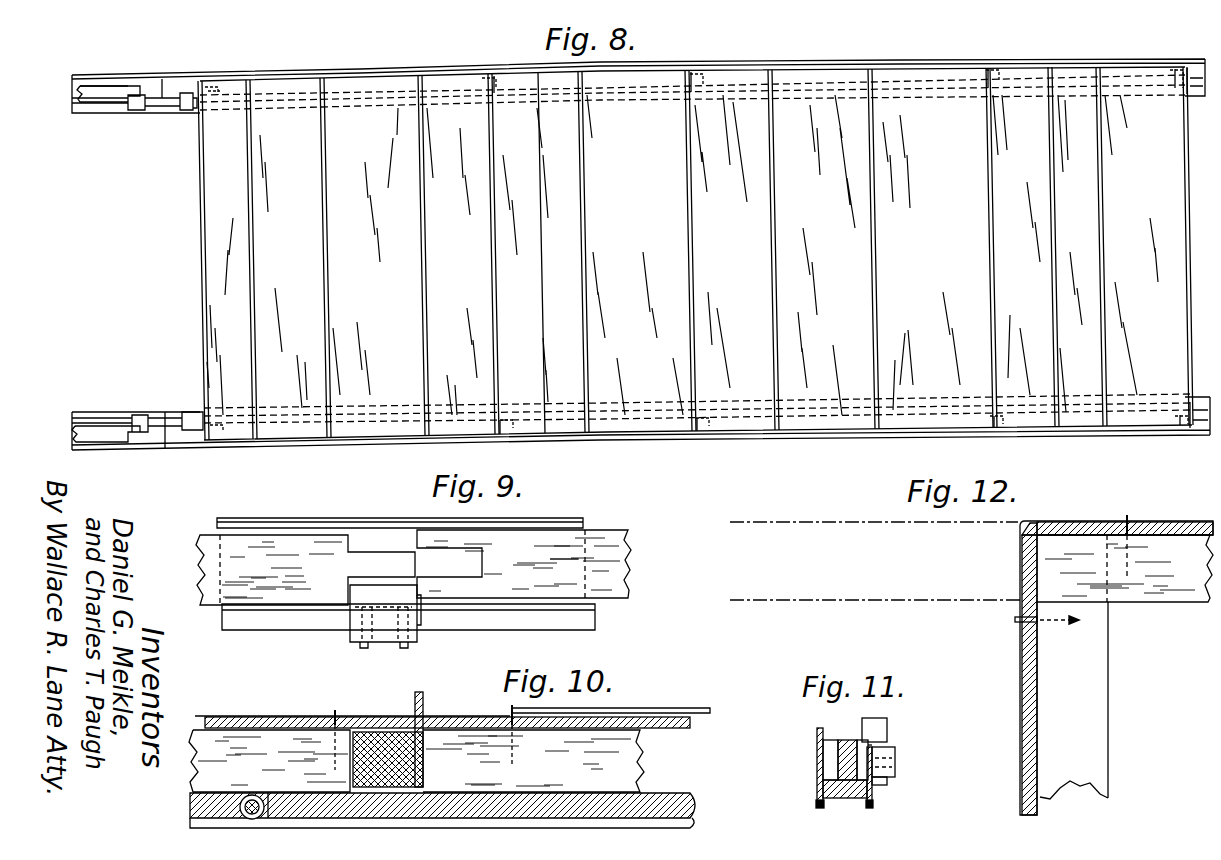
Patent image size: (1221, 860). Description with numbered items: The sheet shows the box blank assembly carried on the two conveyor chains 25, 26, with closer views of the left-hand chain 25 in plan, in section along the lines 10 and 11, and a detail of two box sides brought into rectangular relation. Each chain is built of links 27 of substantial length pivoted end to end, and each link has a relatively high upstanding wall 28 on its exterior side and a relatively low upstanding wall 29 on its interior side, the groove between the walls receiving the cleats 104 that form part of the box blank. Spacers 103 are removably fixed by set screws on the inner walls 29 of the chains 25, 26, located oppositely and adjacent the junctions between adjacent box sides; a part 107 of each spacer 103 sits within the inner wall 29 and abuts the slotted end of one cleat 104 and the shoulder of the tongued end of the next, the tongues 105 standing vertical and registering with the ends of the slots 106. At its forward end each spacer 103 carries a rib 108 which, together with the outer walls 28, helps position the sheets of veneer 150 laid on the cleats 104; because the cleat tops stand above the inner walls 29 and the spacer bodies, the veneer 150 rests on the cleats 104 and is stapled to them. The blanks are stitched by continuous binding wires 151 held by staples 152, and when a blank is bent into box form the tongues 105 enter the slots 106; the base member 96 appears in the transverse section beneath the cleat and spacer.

In FIG. 8, the conveyor chain 25 is at (176, 96).
In FIG. 9, the conveyor chain 25 is at (220, 527).
In FIG. 8, the conveyor chain 26 is at (113, 418).
In FIG. 11, the link 27 is at (860, 798).
In FIG. 11, the upstanding wall 28 is at (817, 742).
In FIG. 11, the upstanding wall 29 is at (895, 770).
In FIG. 11, the base member 96 is at (820, 801).
In FIG. 8, the spacer 103 is at (188, 95).
In FIG. 9, the spacer 103 is at (368, 590).
In FIG. 10, the spacer 103 is at (371, 735).
In FIG. 11, the spacer 103 is at (849, 740).
In FIG. 9, the cleat 104 is at (264, 552).
In FIG. 10, the cleat 104 is at (416, 761).
In FIG. 11, the cleat 104 is at (830, 760).
In FIG. 9, the tongue 105 is at (393, 555).
In FIG. 9, the slot 106 is at (502, 552).
In FIG. 11, the part of the spacer 107 is at (872, 750).
In FIG. 9, the rib 108 is at (420, 622).
In FIG. 10, the rib 108 is at (424, 700).
In FIG. 11, the rib 108 is at (887, 725).
In FIG. 8, the sheet of veneer 150 is at (538, 296).
In FIG. 10, the binding wire 151 is at (692, 707).
In FIG. 12, the binding wire 151 is at (1022, 656).
In FIG. 10, the staple 152 is at (515, 703).
In FIG. 12, the staple 152 is at (1015, 620).
In FIG. 9, the section line 10 is at (657, 564).
In FIG. 9, the section line 11 is at (383, 662).